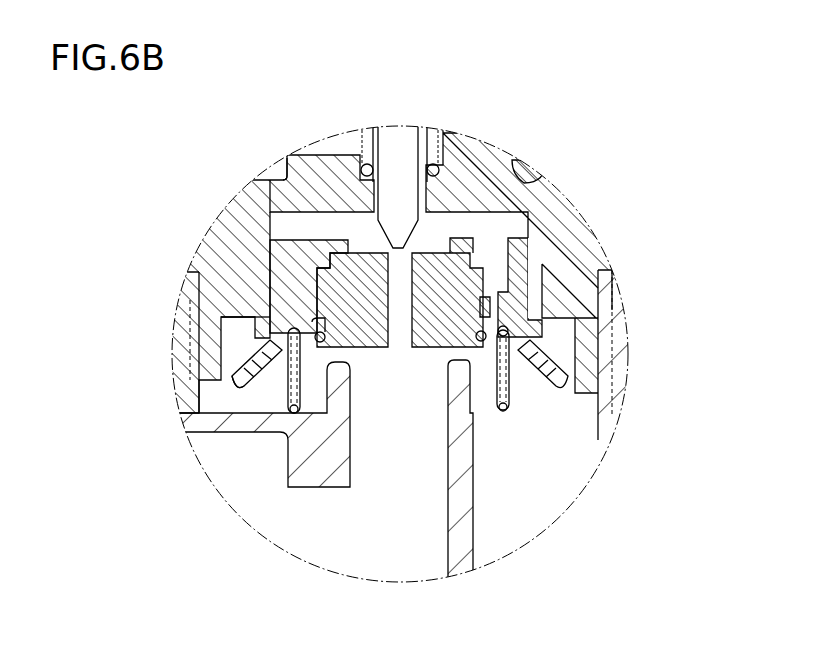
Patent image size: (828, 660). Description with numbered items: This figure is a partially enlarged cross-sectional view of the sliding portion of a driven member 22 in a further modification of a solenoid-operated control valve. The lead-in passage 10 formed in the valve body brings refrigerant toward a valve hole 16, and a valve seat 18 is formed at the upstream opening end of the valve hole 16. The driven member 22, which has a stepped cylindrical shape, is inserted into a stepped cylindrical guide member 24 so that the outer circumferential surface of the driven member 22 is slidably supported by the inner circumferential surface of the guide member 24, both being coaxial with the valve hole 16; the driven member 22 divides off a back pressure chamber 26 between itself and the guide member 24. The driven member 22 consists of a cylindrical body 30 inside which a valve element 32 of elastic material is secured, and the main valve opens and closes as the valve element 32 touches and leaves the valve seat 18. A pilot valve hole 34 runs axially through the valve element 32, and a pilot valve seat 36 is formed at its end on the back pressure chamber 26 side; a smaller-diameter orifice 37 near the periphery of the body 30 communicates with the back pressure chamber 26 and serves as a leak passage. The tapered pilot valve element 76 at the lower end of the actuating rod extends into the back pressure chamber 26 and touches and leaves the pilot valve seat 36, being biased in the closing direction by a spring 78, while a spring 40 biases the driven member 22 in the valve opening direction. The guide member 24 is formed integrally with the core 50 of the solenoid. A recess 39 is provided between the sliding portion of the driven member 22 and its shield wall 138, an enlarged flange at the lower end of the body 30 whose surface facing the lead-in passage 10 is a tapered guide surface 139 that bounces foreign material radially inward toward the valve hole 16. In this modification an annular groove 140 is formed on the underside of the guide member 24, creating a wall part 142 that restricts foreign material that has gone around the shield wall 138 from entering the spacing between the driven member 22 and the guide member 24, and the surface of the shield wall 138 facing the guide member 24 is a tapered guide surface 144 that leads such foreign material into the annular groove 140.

The lead-in passage 10 is at (535, 495).
The valve hole 16 is at (300, 428).
The valve seat 18 is at (248, 355).
The driven member 22 is at (216, 287).
The guide member 24 is at (243, 218).
The back pressure chamber 26 is at (284, 163).
The body 30 is at (272, 250).
The valve element 32 is at (323, 292).
The pilot valve hole 34 is at (408, 293).
The pilot valve seat 36 is at (447, 247).
The orifice 37 is at (512, 322).
The recess 39 is at (290, 338).
The spring 40 is at (594, 385).
The core 50 is at (322, 146).
The pilot valve element 76 is at (417, 232).
The spring 78 is at (444, 137).
The shield wall 138 is at (236, 376).
The guide surface 139 is at (276, 383).
The annular groove 140 is at (262, 300).
The wall part 142 is at (250, 326).
The guide surface 144 is at (255, 350).